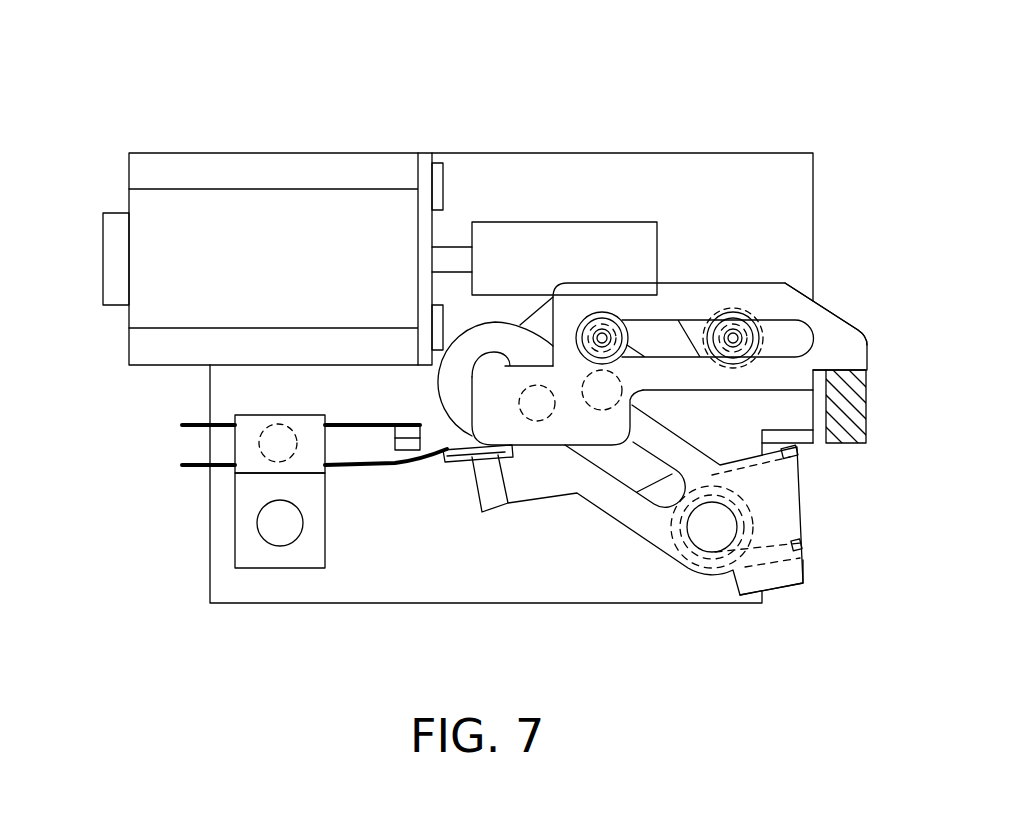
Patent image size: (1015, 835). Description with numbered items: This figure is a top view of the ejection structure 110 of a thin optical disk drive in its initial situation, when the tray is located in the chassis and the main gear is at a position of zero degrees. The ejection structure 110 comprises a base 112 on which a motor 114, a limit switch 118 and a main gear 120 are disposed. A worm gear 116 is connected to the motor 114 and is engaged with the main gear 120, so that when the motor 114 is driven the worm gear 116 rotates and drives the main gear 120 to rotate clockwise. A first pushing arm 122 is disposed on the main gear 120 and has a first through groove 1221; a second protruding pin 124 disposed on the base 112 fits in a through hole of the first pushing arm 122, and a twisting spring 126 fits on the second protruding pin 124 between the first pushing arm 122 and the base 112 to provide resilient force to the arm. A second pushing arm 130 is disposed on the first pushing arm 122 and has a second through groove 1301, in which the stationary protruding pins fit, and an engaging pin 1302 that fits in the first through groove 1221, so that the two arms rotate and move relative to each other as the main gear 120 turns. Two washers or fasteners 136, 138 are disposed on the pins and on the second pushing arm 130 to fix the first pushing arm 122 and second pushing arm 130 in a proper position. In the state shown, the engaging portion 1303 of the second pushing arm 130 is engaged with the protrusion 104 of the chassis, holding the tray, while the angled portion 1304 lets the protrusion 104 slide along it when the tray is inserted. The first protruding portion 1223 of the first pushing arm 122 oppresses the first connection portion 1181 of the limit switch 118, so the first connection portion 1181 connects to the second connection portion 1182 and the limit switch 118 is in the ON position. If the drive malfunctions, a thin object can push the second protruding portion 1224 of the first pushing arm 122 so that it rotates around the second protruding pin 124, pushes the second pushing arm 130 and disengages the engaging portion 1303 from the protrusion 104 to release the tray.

The ejection structure 110 is at (158, 93).
The protrusion 104 is at (847, 408).
The base 112 is at (742, 170).
The motor 114 is at (142, 203).
The worm gear 116 is at (630, 232).
The limit switch 118 is at (243, 523).
The first connection portion 1181 is at (313, 378).
The second connection portion 1182 is at (313, 378).
The main gear 120 is at (694, 413).
The first pushing arm 122 is at (652, 520).
The first through groove 1221 is at (597, 470).
The first protruding portion 1223 is at (476, 494).
The second protruding portion 1224 is at (790, 575).
The second protruding pin 124 is at (712, 530).
The twisting spring 126 is at (790, 452).
The second pushing arm 130 is at (697, 297).
The second through groove 1301 is at (797, 335).
The engaging pin 1302 is at (538, 397).
The engaging portion 1303 is at (845, 368).
The angled portion 1304 is at (850, 322).
The washer or fastener 136 is at (602, 325).
The washer or fastener 138 is at (750, 312).